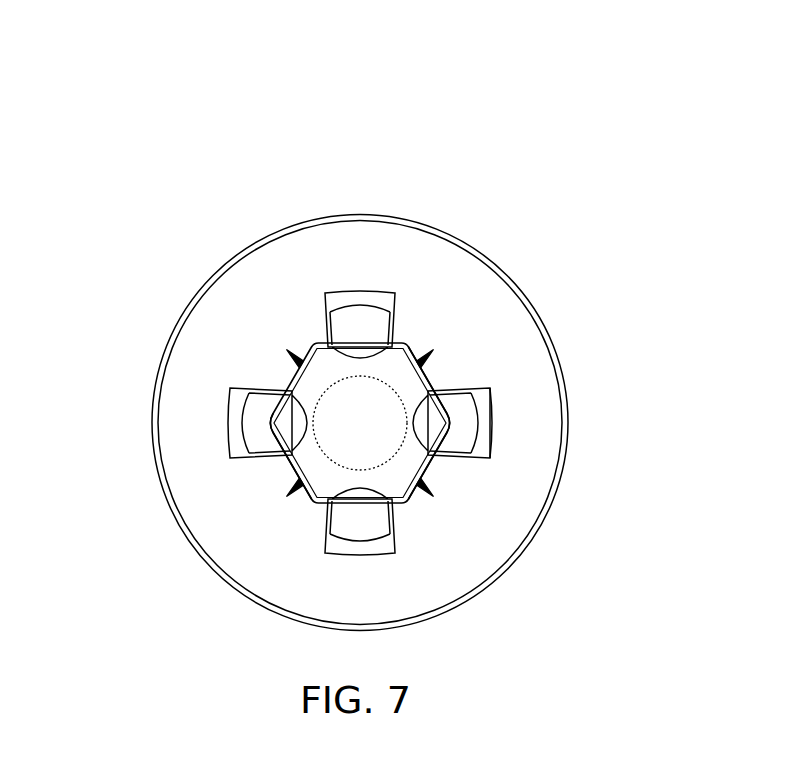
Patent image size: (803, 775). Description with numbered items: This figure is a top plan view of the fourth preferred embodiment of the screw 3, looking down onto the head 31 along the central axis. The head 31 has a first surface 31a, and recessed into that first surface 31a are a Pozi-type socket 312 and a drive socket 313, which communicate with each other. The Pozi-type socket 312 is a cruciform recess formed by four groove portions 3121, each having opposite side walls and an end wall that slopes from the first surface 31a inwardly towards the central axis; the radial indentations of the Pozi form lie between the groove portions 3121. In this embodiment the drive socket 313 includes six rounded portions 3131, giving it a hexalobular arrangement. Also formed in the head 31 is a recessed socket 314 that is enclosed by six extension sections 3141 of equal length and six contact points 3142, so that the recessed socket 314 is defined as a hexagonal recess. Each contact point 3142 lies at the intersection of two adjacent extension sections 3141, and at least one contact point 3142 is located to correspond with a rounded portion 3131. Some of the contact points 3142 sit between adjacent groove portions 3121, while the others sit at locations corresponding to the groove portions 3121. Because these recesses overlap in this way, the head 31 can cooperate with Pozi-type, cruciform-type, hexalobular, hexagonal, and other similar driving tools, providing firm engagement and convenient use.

The screw 3 is at (238, 204).
The head 31 is at (212, 271).
The first surface 31a is at (213, 348).
The Pozi-type socket 312 is at (375, 286).
The groove portion 3121 is at (462, 406).
The drive socket 313 is at (414, 341).
The rounded portion 3131 is at (421, 462).
The recessed socket 314 is at (426, 375).
The extension section 3141 is at (428, 468).
The contact point 3142 is at (432, 370).